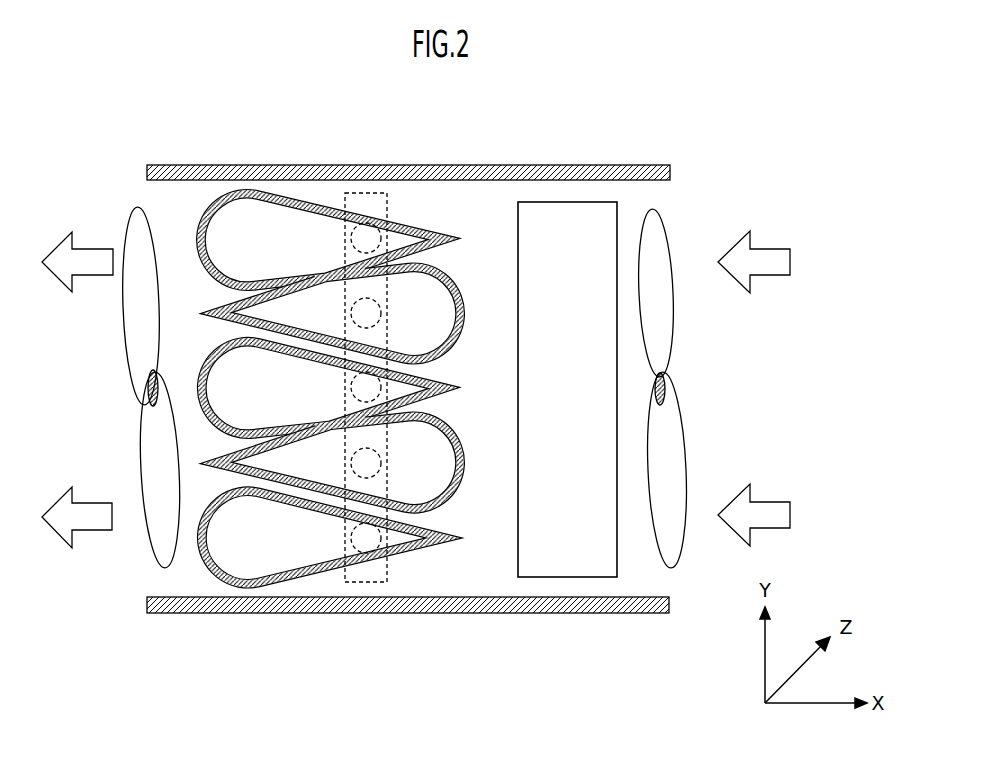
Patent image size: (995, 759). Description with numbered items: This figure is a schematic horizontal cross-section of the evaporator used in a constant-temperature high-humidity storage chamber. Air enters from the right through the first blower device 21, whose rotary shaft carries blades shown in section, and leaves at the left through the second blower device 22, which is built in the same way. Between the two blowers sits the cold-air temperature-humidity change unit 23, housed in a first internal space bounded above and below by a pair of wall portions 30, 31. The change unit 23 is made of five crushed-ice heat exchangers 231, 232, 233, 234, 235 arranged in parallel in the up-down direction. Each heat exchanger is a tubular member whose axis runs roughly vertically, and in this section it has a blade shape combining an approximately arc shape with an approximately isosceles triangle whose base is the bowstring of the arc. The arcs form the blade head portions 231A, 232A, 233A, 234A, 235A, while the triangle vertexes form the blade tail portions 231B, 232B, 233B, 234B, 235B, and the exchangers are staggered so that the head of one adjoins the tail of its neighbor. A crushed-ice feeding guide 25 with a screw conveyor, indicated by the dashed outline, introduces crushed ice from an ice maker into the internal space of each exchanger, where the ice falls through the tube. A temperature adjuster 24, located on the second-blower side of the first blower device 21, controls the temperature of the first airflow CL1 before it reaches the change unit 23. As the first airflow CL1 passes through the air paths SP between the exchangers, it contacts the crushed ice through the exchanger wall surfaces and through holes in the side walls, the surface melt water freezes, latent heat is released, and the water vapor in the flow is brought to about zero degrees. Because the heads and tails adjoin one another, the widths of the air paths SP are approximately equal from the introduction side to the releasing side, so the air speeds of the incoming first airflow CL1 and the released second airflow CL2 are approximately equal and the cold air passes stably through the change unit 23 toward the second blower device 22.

The first blower device 21 is at (670, 568).
The second blower device 22 is at (160, 536).
The cold-air temperature-humidity change unit 23 is at (383, 396).
The temperature adjuster 24 is at (593, 578).
The crushed-ice feeding guide 25 is at (372, 190).
The wall portion 30 is at (653, 164).
The wall portion 31 is at (648, 615).
The crushed-ice heat exchanger 231 is at (232, 189).
The blade head of crushed-ice heat exchanger 231A is at (205, 228).
The blade tail of crushed-ice heat exchanger 231B is at (413, 235).
The crushed-ice heat exchanger 232 is at (450, 282).
The blade head of crushed-ice heat exchanger 232A is at (442, 313).
The blade tail of crushed-ice heat exchanger 232B is at (222, 304).
The crushed-ice heat exchanger 233 is at (213, 352).
The blade head of crushed-ice heat exchanger 233A is at (205, 392).
The blade tail of crushed-ice heat exchanger 233B is at (432, 387).
The crushed-ice heat exchanger 234 is at (465, 477).
The blade head of crushed-ice heat exchanger 234A is at (448, 480).
The blade tail of crushed-ice heat exchanger 234B is at (228, 455).
The crushed-ice heat exchanger 235 is at (310, 583).
The blade head of crushed-ice heat exchanger 235A is at (203, 545).
The blade tail of crushed-ice heat exchanger 235B is at (420, 541).
The air path SP is at (285, 276).
The first airflow CL1 is at (705, 388).
The second airflow CL2 is at (123, 388).